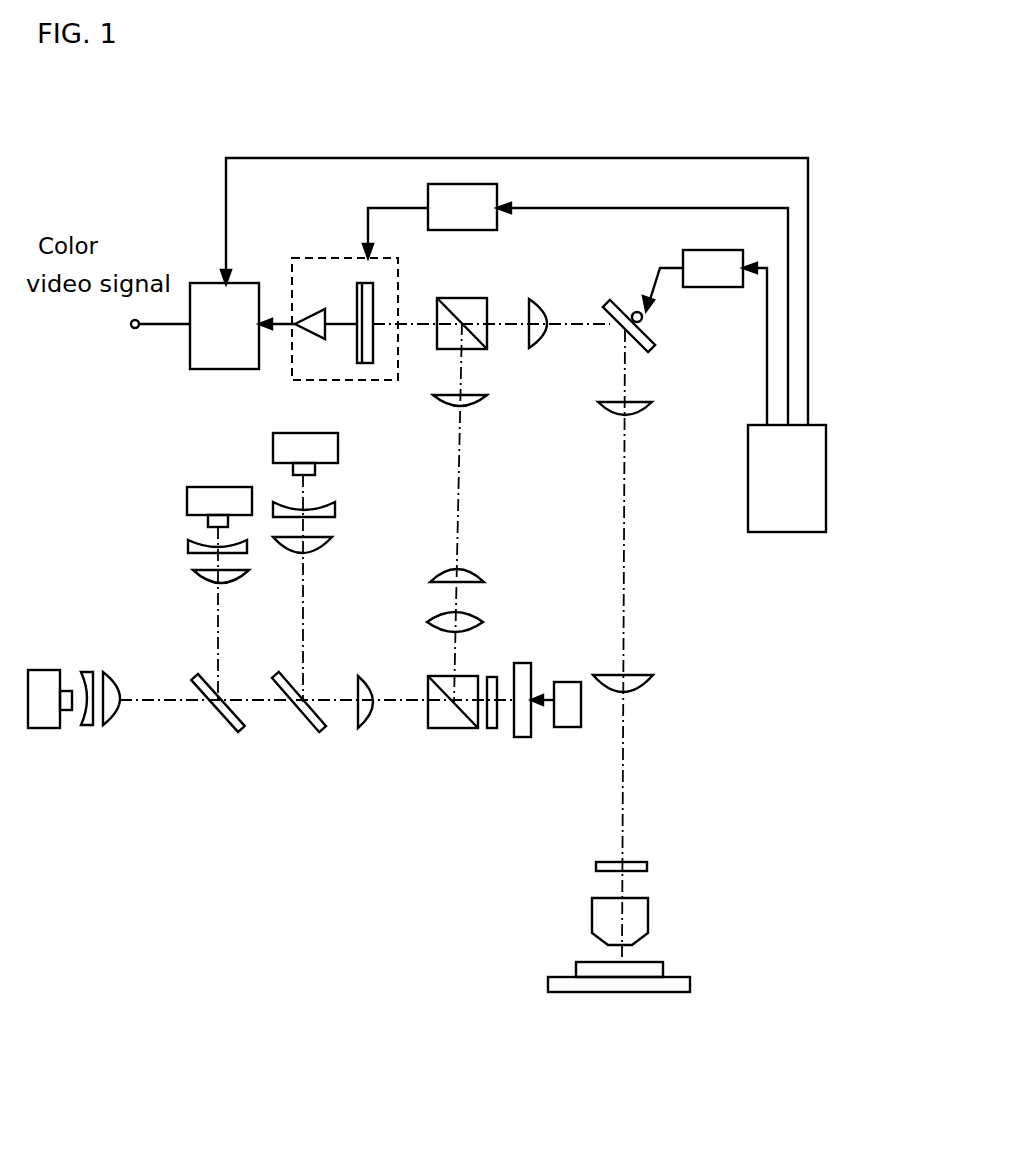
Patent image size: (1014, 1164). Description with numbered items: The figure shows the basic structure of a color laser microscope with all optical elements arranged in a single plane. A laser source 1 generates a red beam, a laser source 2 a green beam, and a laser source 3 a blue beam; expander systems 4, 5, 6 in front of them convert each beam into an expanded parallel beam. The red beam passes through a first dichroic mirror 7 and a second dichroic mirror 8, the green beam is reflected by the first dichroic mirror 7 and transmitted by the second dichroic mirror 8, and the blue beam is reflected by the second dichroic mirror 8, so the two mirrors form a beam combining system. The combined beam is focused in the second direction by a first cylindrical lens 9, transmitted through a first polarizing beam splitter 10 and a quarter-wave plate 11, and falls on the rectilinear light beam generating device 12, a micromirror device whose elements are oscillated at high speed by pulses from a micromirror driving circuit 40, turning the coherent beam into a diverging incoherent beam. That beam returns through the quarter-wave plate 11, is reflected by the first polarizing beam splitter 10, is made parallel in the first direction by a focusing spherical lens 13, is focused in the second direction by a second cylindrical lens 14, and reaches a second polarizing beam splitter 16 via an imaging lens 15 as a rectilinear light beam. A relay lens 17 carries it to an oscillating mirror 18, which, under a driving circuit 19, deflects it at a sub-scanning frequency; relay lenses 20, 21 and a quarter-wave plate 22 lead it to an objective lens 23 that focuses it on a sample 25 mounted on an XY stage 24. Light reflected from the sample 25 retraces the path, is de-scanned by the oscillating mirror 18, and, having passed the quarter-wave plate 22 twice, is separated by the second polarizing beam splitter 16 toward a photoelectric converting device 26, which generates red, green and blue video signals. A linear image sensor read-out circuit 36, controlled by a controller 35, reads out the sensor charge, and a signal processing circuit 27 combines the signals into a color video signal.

The laser source 1 is at (47, 670).
The laser source 2 is at (198, 487).
The laser source 3 is at (300, 434).
The expander system 4 is at (100, 672).
The expander system 5 is at (190, 558).
The expander system 6 is at (340, 530).
The first dichroic mirror 7 is at (220, 715).
The second dichroic mirror 8 is at (305, 718).
The first cylindrical lens 9 is at (362, 730).
The first polarizing beam splitter 10 is at (448, 728).
The quarter-wave plate 11 is at (491, 729).
The rectilinear light beam generating device 12 is at (522, 738).
The focusing spherical lens 13 is at (483, 625).
The second cylindrical lens 14 is at (484, 578).
The imaging lens 15 is at (487, 397).
The second polarizing beam splitter 16 is at (462, 298).
The relay lens 17 is at (545, 305).
The oscillating mirror 18 is at (652, 348).
The driving circuit 19 is at (694, 250).
The relay lens 20 is at (650, 402).
The relay lens 21 is at (640, 674).
The quarter-wave plate 22 is at (648, 863).
The objective lens 23 is at (648, 905).
The XY stage 24 is at (692, 989).
The sample 25 is at (663, 963).
The photoelectric converting device 26 is at (298, 257).
The signal processing circuit 27 is at (250, 283).
The controller 35 is at (792, 532).
The linear image sensor read-out circuit 36 is at (497, 197).
The micromirror driving circuit 40 is at (568, 682).